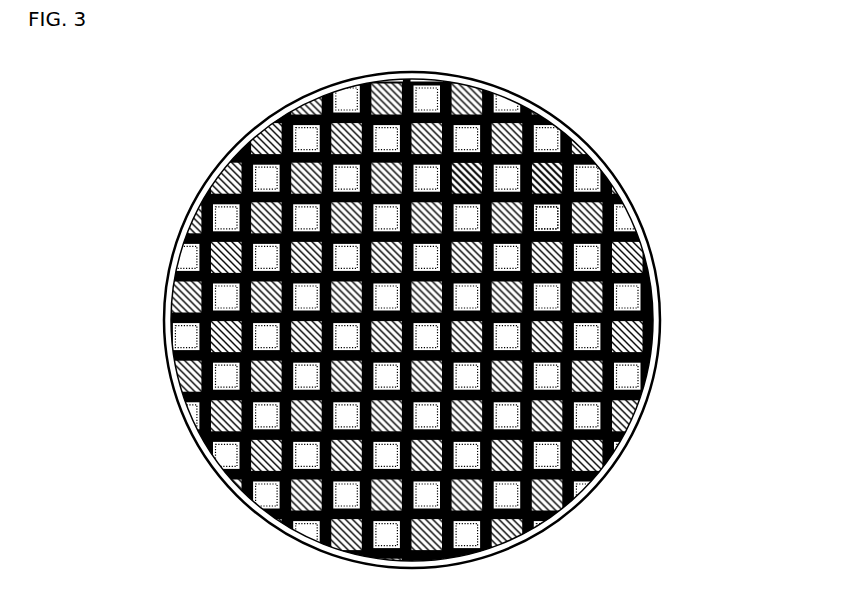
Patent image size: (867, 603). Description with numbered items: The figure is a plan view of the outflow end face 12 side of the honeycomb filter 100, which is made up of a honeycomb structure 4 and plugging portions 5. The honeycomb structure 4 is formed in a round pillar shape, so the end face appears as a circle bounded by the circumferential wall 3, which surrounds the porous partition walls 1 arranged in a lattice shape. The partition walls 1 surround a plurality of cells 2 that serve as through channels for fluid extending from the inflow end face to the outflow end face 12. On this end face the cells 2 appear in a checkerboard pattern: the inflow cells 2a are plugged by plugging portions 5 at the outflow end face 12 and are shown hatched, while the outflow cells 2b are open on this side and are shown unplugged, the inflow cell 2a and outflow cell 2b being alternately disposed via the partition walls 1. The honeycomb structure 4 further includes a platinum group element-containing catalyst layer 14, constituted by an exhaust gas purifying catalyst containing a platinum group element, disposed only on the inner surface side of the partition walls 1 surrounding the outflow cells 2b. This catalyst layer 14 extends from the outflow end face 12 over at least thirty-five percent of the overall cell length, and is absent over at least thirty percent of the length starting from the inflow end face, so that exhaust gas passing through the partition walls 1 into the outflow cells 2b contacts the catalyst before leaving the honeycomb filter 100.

The honeycomb filter 100 is at (763, 47).
The partition walls 1 is at (545, 158).
The cells 2 is at (427, 337).
The inflow cells 2a is at (548, 172).
The outflow cells 2b is at (545, 218).
The circumferential wall 3 is at (606, 470).
The honeycomb structure 4 is at (657, 255).
The plugging portions 5 is at (477, 168).
The outflow end face 12 is at (223, 141).
The platinum group element-containing catalyst layer 14 is at (406, 130).